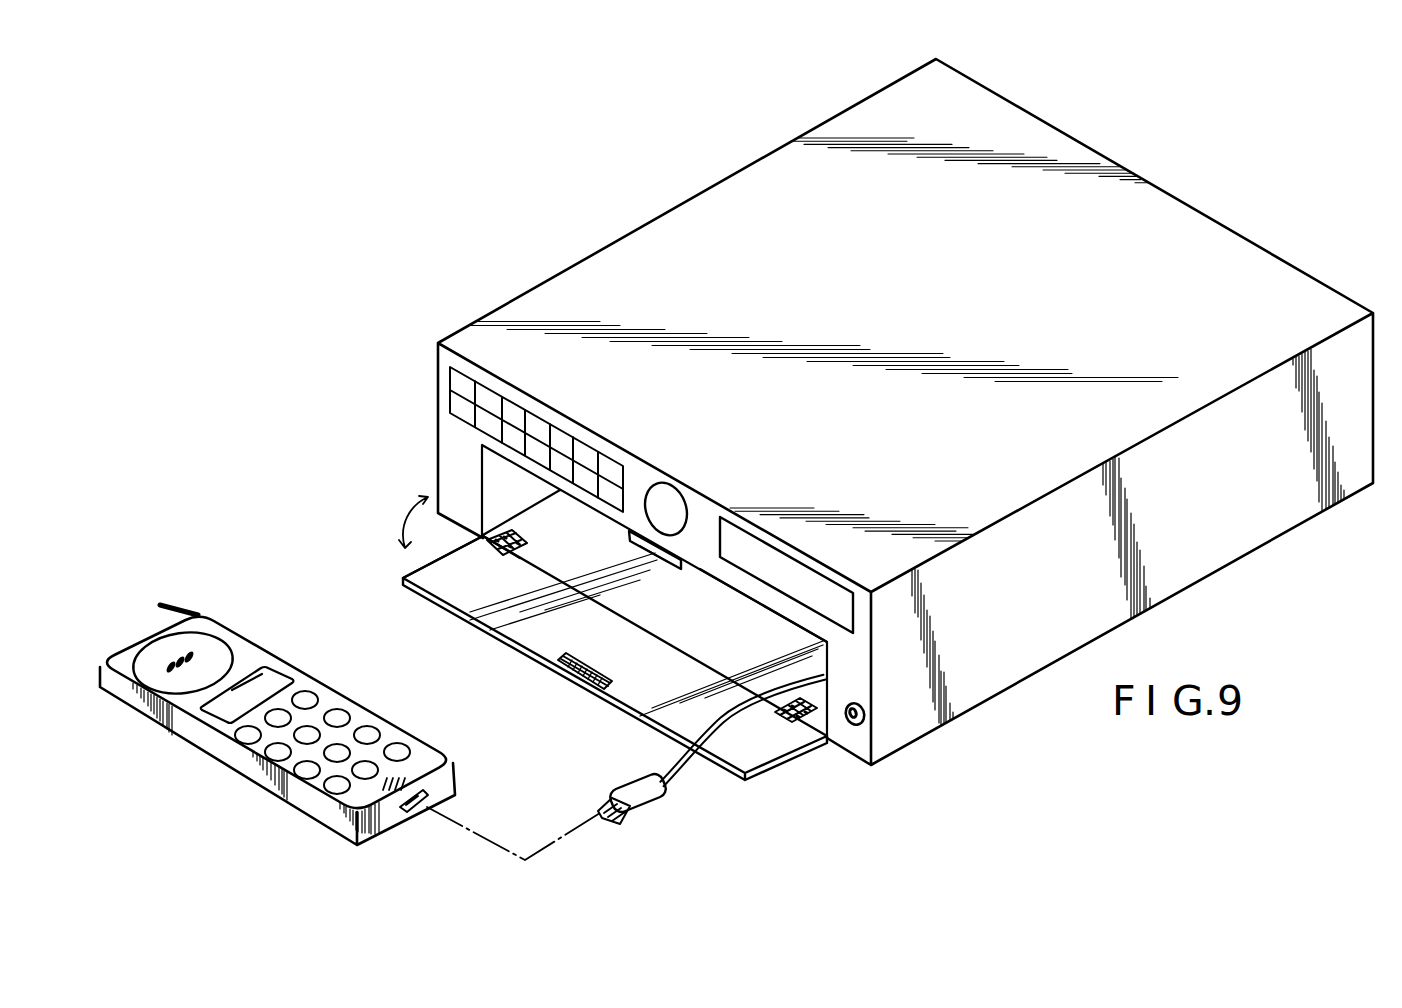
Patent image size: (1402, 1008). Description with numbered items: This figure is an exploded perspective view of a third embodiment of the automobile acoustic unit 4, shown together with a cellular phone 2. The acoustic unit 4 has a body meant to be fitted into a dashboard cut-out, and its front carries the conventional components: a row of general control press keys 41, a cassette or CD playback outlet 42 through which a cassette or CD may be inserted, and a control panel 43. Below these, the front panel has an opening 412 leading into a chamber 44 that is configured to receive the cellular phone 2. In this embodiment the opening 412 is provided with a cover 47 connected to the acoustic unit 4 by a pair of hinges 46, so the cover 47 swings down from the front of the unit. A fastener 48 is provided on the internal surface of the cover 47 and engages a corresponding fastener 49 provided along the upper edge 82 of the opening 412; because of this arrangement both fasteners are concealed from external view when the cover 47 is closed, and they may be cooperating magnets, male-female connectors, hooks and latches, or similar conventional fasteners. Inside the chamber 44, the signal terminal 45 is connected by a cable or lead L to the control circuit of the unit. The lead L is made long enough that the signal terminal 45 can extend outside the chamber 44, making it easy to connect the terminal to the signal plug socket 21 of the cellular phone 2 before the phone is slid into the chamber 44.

The automobile acoustic unit 4 is at (758, 137).
The general control press keys 41 is at (435, 368).
The cassette or CD playback outlet 42 is at (810, 585).
The control panel 43 is at (700, 507).
The opening 412 is at (687, 563).
The chamber 44 is at (550, 545).
The cellular phone signal terminal 45 is at (670, 813).
The hinges 46 is at (490, 557).
The cover 47 is at (457, 585).
The fastener 48 is at (565, 678).
The fastener 49 is at (662, 560).
The upper edge 82 is at (755, 602).
The cable or lead L is at (740, 732).
The cellular phone 2 is at (200, 770).
The signal plug socket 21 is at (417, 803).